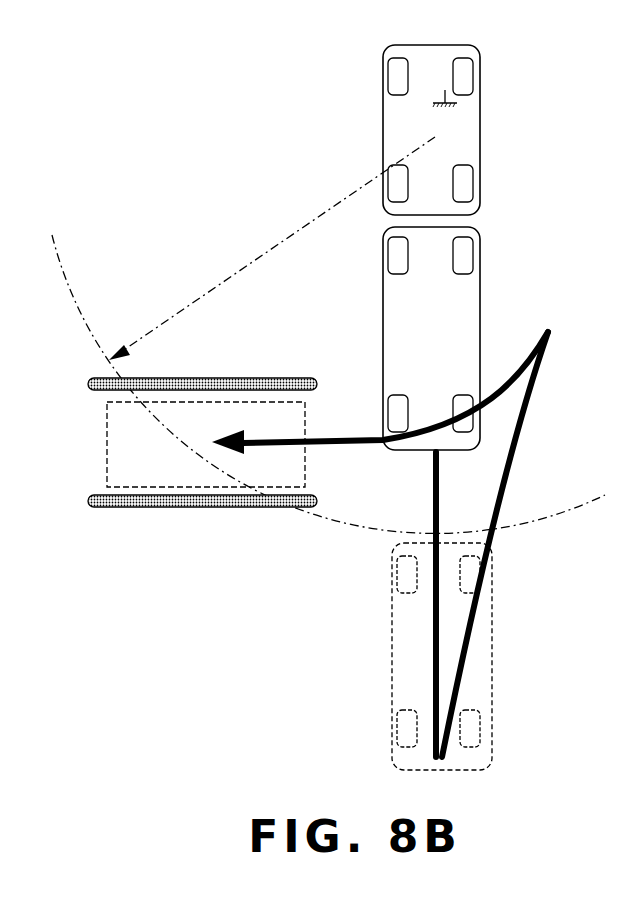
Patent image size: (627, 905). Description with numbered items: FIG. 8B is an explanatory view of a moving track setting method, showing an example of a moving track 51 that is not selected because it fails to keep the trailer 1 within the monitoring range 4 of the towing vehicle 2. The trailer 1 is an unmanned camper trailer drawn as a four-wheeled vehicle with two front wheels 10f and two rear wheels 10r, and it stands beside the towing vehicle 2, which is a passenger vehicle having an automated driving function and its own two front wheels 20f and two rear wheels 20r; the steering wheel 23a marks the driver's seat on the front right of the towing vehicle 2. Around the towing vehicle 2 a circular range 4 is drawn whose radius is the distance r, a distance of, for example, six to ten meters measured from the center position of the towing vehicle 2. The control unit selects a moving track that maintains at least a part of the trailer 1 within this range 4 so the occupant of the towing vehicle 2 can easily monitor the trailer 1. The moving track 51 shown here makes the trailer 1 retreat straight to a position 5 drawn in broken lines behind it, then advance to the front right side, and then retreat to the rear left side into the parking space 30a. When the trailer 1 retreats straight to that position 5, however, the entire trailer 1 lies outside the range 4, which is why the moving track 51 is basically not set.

The trailer 1 is at (383, 318).
The towing vehicle 2 is at (480, 128).
The range 4 is at (566, 510).
The target parking position of vehicle 5 is at (392, 645).
The front wheels 10f is at (383, 262).
The rear wheels 10r is at (384, 398).
The front wheels 20f is at (383, 82).
The rear wheels 20r is at (480, 178).
The steering wheel 23a is at (458, 103).
The parking space 30a is at (161, 494).
The moving track 51 is at (521, 420).
The distance r is at (272, 248).